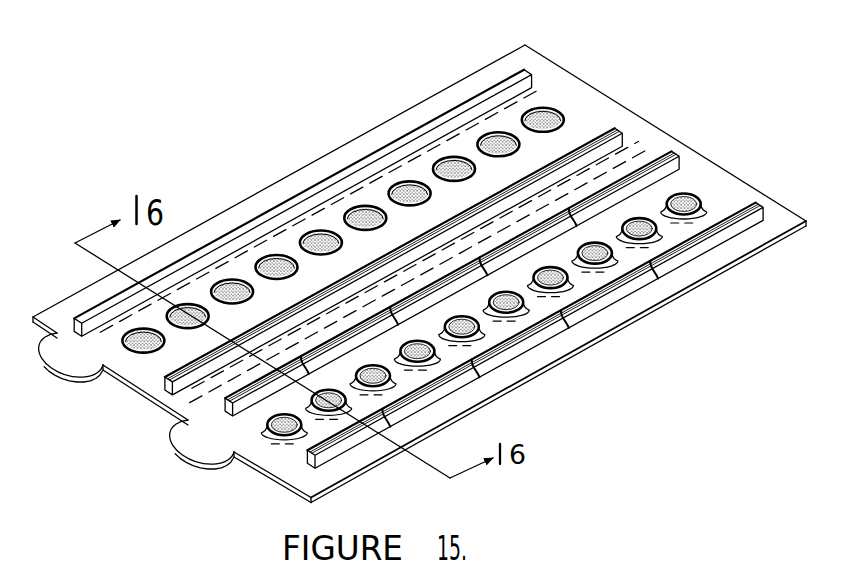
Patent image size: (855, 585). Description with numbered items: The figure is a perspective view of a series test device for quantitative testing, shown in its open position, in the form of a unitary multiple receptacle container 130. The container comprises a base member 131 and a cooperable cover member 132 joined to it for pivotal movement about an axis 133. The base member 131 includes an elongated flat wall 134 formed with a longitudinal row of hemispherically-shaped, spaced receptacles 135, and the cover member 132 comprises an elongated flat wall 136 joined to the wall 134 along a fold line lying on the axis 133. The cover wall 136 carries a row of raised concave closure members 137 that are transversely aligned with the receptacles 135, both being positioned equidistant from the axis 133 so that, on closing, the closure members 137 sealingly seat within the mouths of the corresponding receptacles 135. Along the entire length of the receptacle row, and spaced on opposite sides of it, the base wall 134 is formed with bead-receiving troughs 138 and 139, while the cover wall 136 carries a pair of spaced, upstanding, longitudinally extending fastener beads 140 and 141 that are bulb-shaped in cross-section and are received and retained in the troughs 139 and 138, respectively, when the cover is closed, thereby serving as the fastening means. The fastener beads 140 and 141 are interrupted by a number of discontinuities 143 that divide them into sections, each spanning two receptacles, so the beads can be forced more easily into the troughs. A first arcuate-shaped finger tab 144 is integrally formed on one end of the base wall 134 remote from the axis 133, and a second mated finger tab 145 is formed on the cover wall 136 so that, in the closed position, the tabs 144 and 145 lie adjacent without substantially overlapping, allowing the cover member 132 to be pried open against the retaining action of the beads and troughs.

The unitary multiple receptacle container 130 is at (158, 404).
The base member 131 is at (72, 292).
The cover member 132 is at (366, 474).
The axis 133 is at (650, 140).
The elongated flat wall 134 is at (558, 82).
The receptacles 135 is at (406, 181).
The elongated flat wall 136 is at (708, 177).
The raised concave closure members 137 is at (608, 272).
The bead-receiving trough 138 is at (467, 108).
The bead-receiving trough 139 is at (608, 126).
The fastener bead 140 is at (674, 152).
The fastener bead 141 is at (760, 206).
The discontinuities 143 is at (386, 418).
The first arcuate-shaped finger tab 144 is at (77, 364).
The second mated finger tab 145 is at (182, 440).